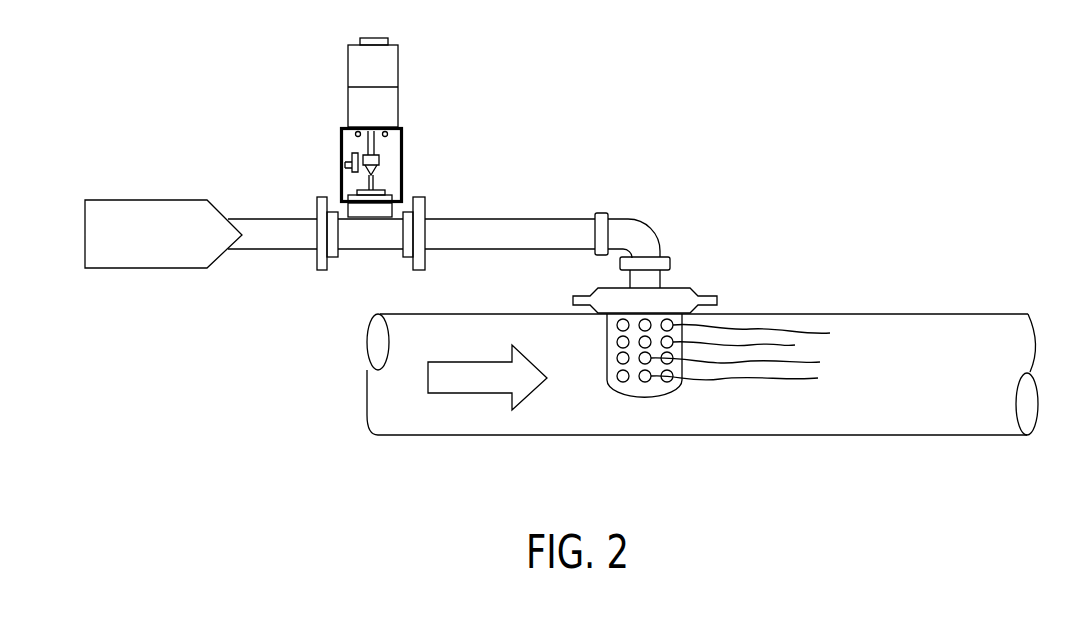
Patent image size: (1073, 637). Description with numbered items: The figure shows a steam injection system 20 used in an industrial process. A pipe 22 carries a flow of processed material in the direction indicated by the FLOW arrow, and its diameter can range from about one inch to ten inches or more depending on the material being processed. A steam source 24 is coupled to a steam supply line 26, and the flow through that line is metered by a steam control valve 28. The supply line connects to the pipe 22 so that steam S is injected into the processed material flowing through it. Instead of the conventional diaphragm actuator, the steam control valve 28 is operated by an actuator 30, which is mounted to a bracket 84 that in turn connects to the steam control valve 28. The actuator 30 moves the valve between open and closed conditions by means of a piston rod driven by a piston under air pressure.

The steam injection system 20 is at (718, 172).
The pipe 22 is at (927, 313).
The steam source 24 is at (158, 200).
The steam supply line 26 is at (510, 217).
The steam control valve 28 is at (370, 222).
The actuator 30 is at (412, 69).
The bracket 84 is at (403, 153).
The steam S is at (800, 332).